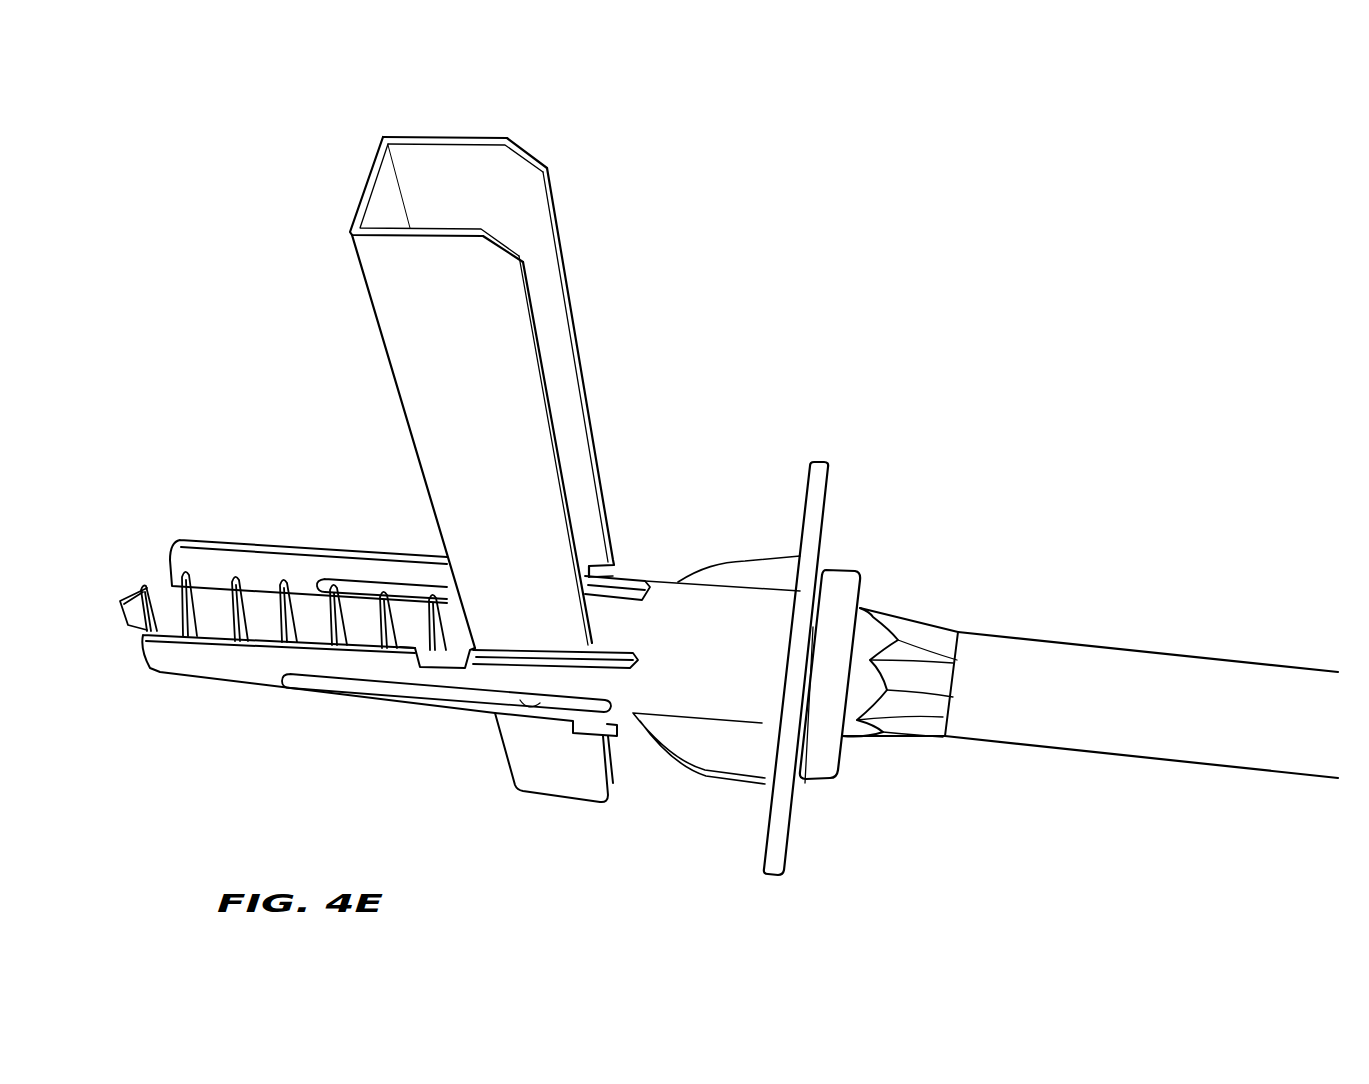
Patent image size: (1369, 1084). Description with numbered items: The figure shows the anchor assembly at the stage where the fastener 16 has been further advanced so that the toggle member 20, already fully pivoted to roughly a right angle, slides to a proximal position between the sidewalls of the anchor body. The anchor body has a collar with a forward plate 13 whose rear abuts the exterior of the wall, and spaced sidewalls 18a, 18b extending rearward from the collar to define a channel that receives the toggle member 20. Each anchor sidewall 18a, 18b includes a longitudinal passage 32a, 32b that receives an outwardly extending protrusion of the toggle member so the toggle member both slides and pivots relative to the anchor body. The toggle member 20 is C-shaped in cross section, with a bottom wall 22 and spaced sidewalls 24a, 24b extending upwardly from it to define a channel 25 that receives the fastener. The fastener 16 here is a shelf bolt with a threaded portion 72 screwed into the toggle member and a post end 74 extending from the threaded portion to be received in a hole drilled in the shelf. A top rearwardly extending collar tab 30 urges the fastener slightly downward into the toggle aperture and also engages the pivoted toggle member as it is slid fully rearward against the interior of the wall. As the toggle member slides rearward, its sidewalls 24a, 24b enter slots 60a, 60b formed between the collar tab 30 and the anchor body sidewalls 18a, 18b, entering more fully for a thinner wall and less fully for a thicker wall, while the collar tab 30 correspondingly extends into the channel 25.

The forward plate 13 is at (828, 462).
The fastener 16 is at (124, 605).
The anchor body sidewall 18a is at (177, 662).
The anchor body sidewall 18b is at (207, 540).
The toggle member 20 is at (578, 300).
The bottom wall 22 is at (363, 188).
The toggle member sidewall 24a is at (413, 327).
The toggle member sidewall 24b is at (480, 137).
The channel 25 is at (530, 212).
The collar tab 30 is at (600, 622).
The longitudinal passage 32a is at (360, 688).
The longitudinal passage 32b is at (352, 580).
The slot 60a is at (618, 657).
The slot 60b is at (633, 587).
The threaded portion 72 is at (182, 598).
The post end 74 is at (1060, 663).